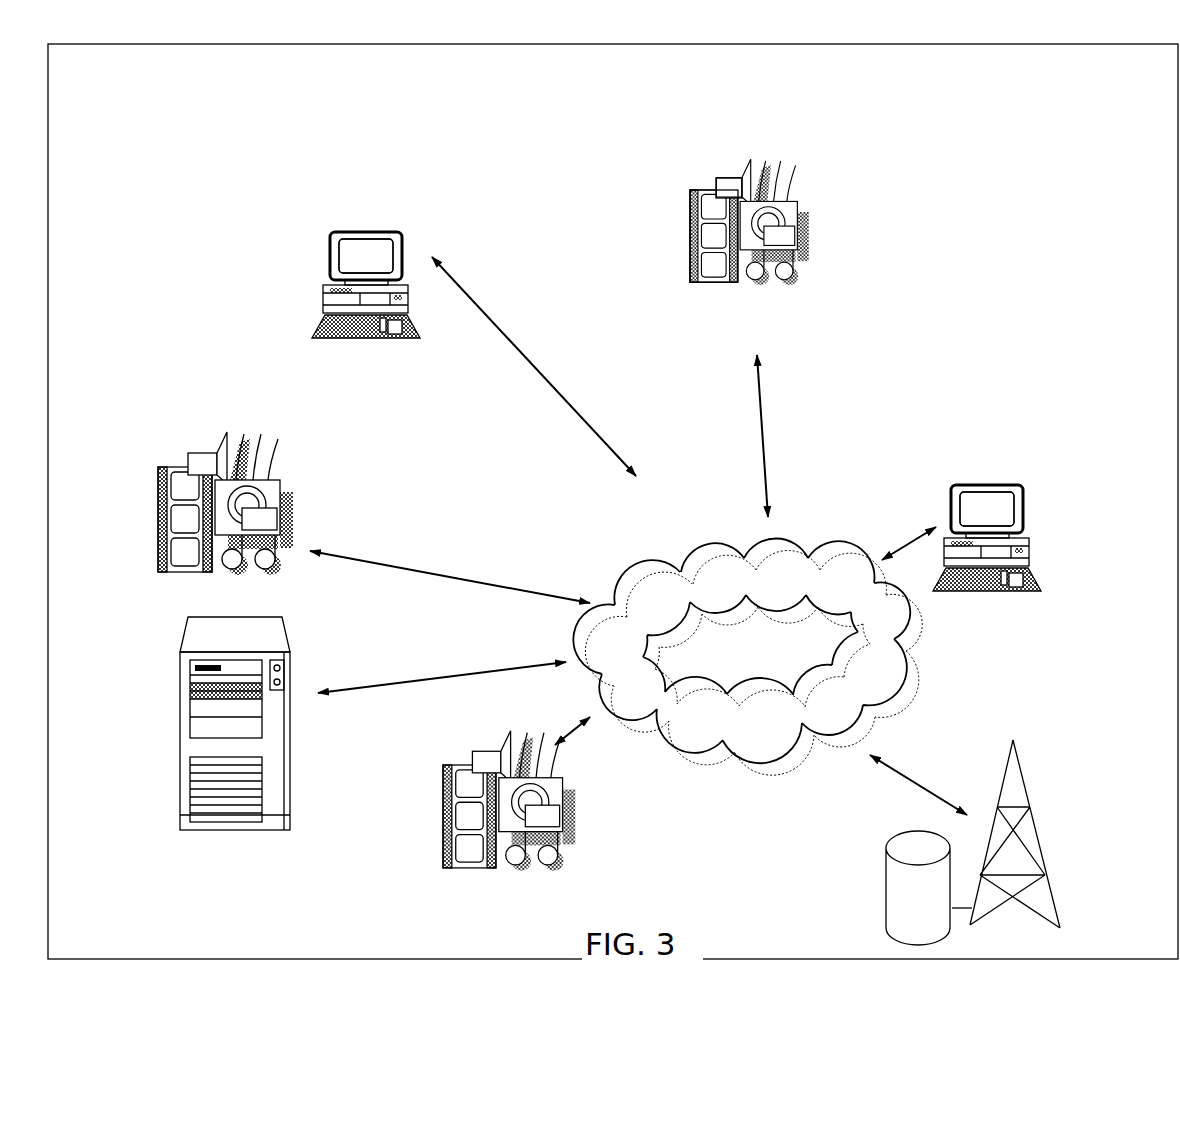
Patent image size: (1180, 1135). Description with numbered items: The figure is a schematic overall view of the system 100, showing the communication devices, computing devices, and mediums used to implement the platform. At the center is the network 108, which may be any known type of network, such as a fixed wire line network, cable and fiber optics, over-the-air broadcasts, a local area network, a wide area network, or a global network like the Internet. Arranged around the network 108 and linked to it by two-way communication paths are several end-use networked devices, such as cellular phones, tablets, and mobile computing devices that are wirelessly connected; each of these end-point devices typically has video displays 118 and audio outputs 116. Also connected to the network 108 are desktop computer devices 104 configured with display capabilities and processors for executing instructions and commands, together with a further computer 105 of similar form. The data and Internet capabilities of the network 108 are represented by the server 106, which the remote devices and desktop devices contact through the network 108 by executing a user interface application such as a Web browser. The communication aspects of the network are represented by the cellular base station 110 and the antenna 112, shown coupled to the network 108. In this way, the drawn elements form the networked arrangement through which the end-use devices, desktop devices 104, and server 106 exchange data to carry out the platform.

The system 100 is at (982, 180).
The desktop computer device 104 is at (1000, 560).
The computer 105 is at (330, 228).
The server 106 is at (195, 738).
The network 108 is at (686, 760).
The cellular base station 110 is at (890, 903).
The antenna 112 is at (1045, 843).
The audio outputs 116 is at (738, 178).
The video displays 118 is at (694, 252).